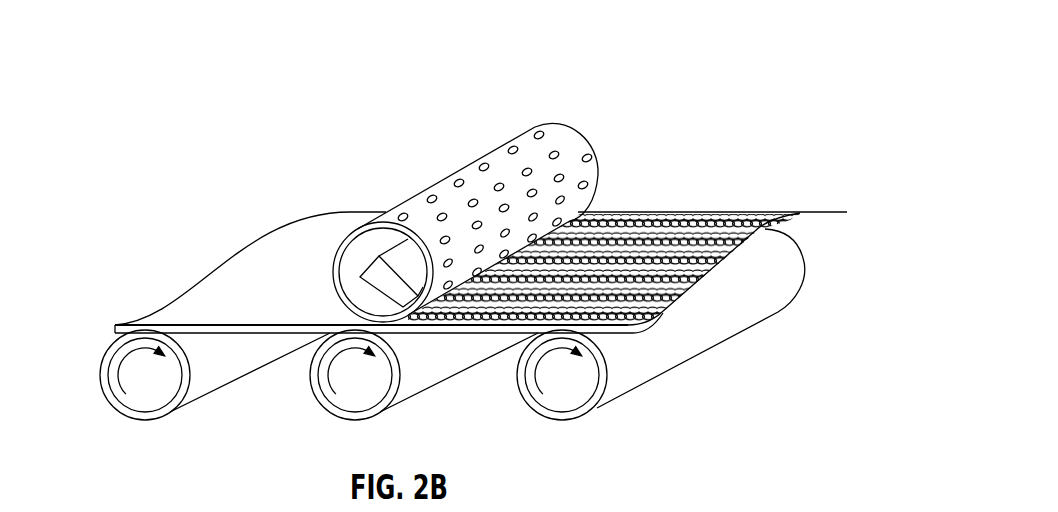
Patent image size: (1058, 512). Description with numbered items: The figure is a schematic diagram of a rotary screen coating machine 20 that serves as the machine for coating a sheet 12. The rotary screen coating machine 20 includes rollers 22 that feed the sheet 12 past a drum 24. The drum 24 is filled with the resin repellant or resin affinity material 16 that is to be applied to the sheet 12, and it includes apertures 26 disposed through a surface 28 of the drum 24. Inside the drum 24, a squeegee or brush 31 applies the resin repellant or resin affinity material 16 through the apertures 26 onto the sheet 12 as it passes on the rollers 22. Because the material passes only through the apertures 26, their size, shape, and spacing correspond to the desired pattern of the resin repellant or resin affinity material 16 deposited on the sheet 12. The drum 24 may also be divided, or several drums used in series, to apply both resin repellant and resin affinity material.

The rotary screen coating machine 20 is at (603, 50).
The sheet 12 is at (710, 212).
The resin repellant or resin affinity material 16 is at (640, 212).
The rollers 22 is at (202, 382).
The drum 24 is at (483, 197).
The apertures 26 is at (430, 197).
The surface 28 is at (525, 137).
The squeegee or brush 31 is at (372, 273).